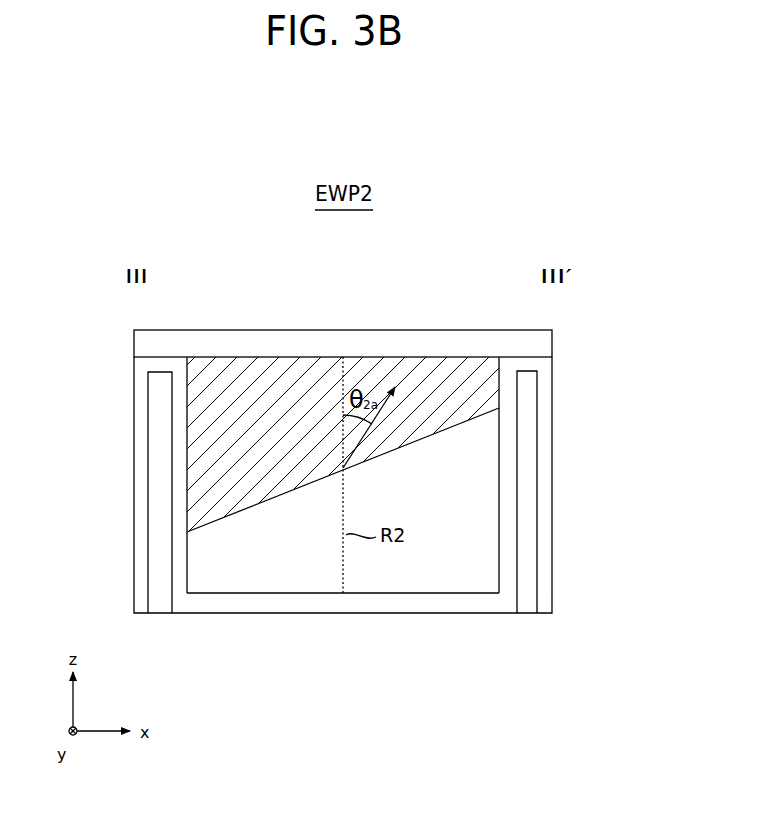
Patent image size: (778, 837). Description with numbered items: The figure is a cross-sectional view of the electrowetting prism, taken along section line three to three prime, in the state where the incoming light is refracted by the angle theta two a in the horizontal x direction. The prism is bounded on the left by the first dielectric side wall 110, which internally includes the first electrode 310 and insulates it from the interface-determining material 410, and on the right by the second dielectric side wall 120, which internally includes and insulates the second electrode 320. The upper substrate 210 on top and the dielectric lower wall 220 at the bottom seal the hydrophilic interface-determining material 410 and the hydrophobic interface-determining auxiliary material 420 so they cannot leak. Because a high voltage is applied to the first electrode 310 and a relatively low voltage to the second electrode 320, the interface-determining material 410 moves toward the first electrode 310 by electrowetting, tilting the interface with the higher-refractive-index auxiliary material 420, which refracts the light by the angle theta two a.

The first dielectric side wall 110 is at (178, 435).
The second dielectric side wall 120 is at (508, 397).
The upper substrate 210 is at (541, 343).
The dielectric lower wall 220 is at (441, 603).
The first electrode 310 is at (158, 503).
The second electrode 320 is at (525, 496).
The interface-determining material 410 is at (420, 413).
The interface-determining auxiliary material 420 is at (472, 552).